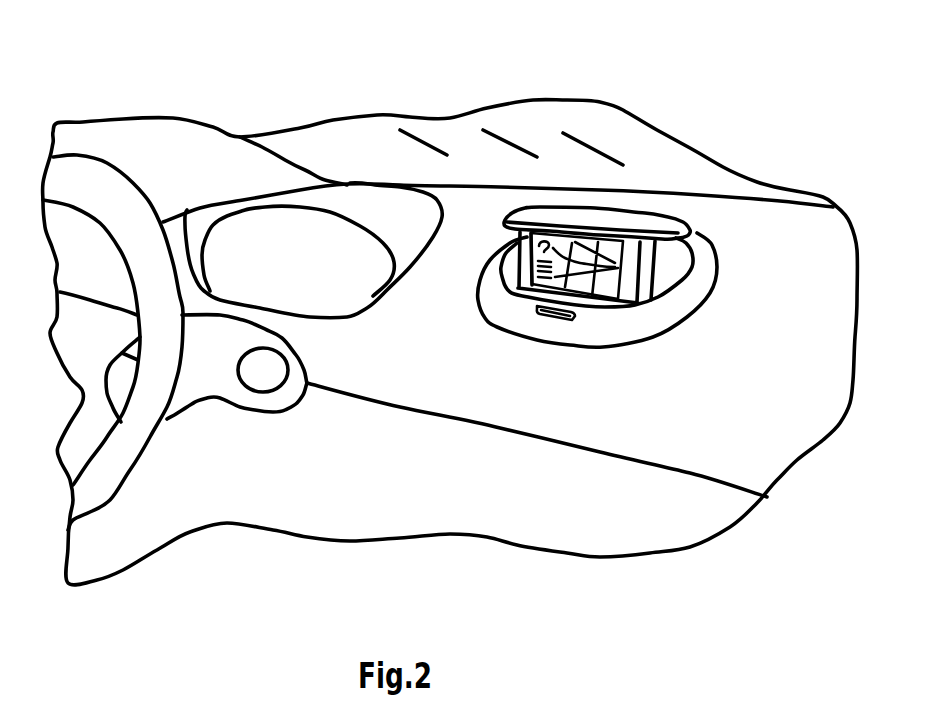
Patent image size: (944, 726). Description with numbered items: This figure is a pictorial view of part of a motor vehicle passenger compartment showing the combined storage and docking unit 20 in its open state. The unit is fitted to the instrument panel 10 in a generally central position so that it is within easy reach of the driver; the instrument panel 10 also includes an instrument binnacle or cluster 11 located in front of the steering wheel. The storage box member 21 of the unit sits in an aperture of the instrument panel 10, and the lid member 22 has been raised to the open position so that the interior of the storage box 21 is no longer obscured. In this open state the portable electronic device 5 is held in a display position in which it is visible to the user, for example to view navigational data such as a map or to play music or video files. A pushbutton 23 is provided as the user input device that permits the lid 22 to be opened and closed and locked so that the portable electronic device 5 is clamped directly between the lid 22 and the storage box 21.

The instrument panel 10 is at (403, 410).
The instrument binnacle or cluster 11 is at (327, 322).
The combined storage and docking unit 20 is at (488, 321).
The storage box member 21 is at (639, 300).
The lid member 22 is at (668, 240).
The portable electronic device 5 is at (623, 278).
The pushbutton 23 is at (557, 318).